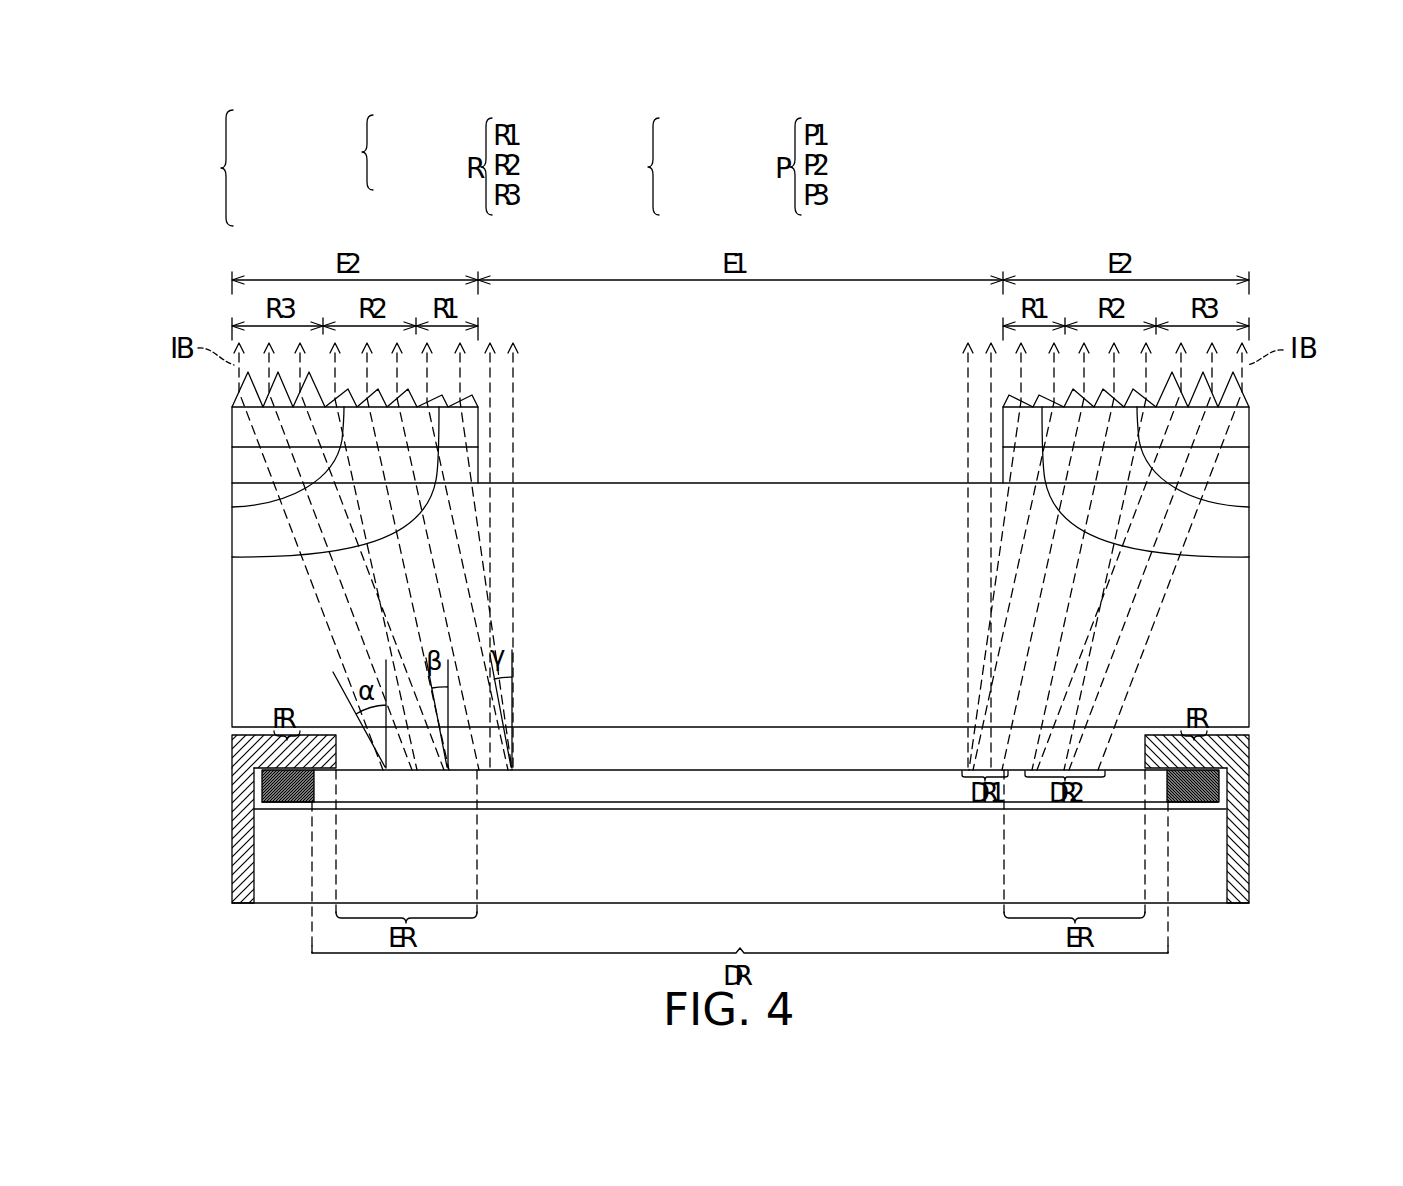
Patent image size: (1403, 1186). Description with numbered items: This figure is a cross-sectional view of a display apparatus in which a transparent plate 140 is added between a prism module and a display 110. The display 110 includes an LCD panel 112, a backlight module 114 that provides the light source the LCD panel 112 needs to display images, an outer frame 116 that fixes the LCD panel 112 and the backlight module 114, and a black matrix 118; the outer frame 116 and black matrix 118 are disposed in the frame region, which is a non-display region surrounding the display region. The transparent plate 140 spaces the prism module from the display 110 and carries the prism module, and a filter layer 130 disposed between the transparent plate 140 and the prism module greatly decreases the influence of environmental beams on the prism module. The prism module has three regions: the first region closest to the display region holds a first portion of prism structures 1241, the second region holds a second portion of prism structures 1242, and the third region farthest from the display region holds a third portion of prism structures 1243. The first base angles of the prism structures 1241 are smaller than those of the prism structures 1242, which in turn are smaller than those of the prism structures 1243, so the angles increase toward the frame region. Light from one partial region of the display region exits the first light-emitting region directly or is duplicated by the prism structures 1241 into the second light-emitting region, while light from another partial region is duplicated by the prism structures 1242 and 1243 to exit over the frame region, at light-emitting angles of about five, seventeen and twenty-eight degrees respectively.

The display 110 is at (741, 508).
The LCD panel 112 is at (1277, 752).
The backlight module 114 is at (1277, 887).
The outer frame 116 is at (1277, 850).
The black matrix 118 is at (1277, 790).
The filter layer 130 is at (243, 466).
The transparent plate 140 is at (1208, 692).
The prism structures 1241 is at (1281, 556).
The prism structures 1242 is at (1281, 508).
The prism structures 1243 is at (1281, 392).